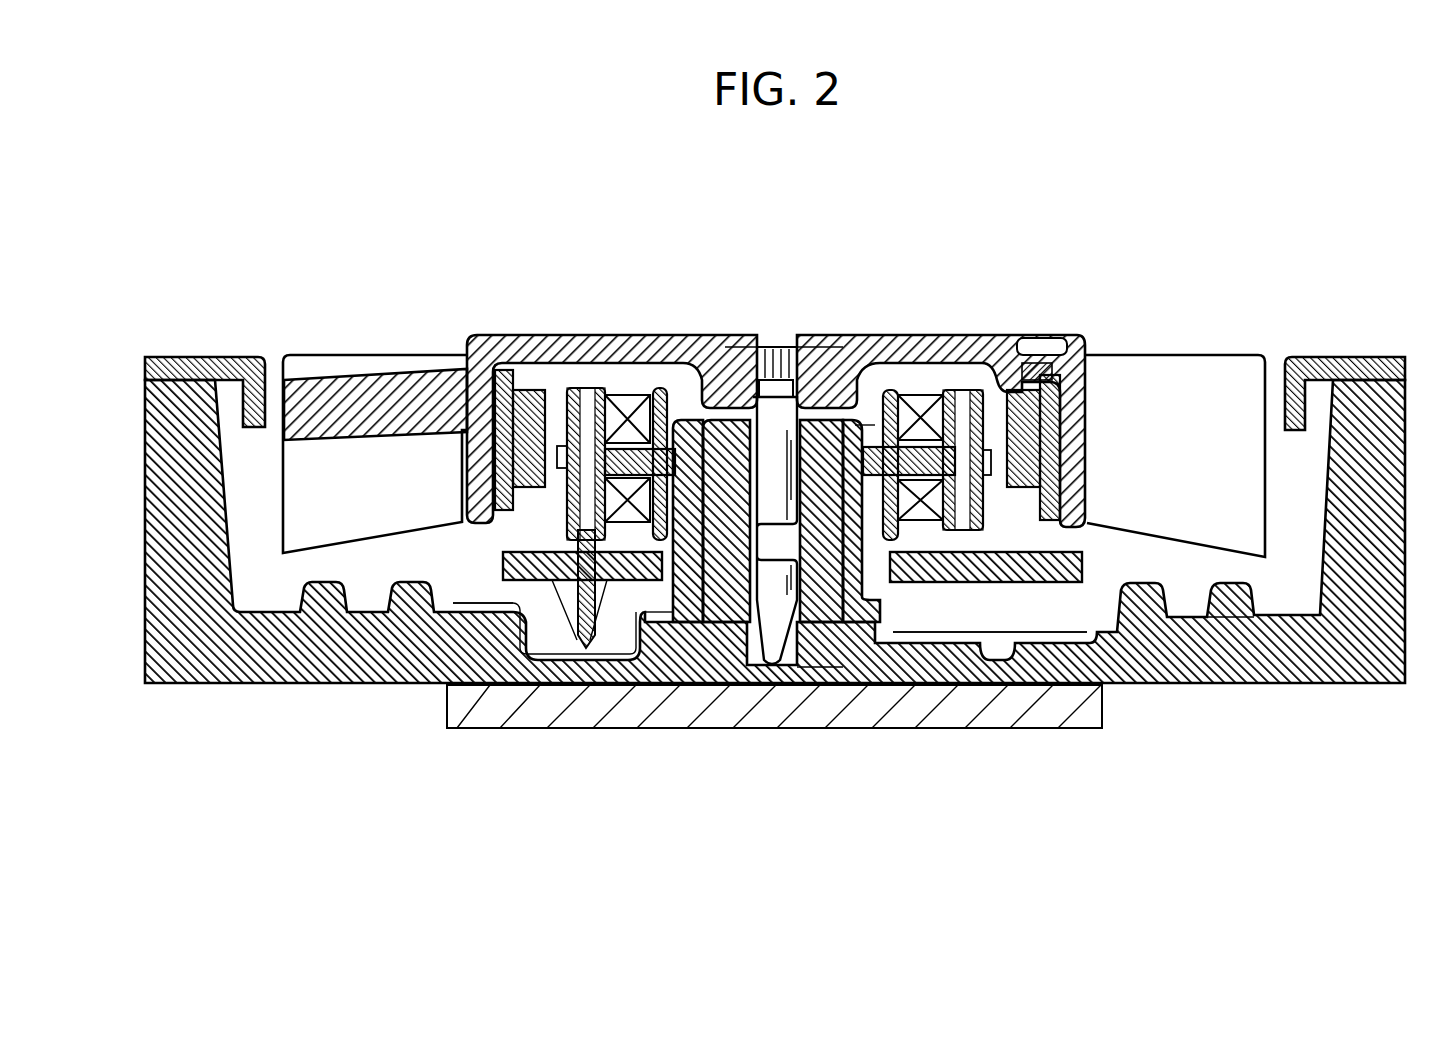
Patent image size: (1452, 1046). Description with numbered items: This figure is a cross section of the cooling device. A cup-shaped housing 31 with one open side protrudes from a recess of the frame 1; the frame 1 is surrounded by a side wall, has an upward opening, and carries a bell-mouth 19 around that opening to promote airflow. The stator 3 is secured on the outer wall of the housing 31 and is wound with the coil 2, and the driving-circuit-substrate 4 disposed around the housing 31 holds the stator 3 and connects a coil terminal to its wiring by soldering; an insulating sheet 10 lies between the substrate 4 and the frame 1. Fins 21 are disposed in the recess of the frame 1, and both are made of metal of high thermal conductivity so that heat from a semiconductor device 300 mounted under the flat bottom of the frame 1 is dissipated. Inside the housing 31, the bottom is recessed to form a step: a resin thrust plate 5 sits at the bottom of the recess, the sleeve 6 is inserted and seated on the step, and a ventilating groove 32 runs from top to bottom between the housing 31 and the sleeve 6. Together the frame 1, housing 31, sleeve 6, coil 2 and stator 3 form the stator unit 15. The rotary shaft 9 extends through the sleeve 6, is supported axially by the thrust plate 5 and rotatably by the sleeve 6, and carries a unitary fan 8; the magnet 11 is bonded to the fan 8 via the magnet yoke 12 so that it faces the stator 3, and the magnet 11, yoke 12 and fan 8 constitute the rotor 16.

The frame 1 is at (248, 660).
The coil 2 is at (930, 398).
The stator 3 is at (637, 507).
The driving-circuit-substrate 4 is at (505, 580).
The thrust plate 5 is at (790, 640).
The sleeve 6 is at (847, 653).
The fan 8 is at (385, 385).
The rotary shaft 9 is at (752, 660).
The insulating sheet 10 is at (1045, 632).
The magnet 11 is at (1082, 337).
The magnet yoke 12 is at (512, 385).
The stator unit 15 is at (515, 687).
The rotor 16 is at (700, 337).
The bell-mouth 19 is at (1340, 355).
The fins 21 is at (1228, 600).
The housing 31 is at (857, 428).
The ventilating groove 32 is at (700, 640).
The semiconductor device 300 is at (960, 705).